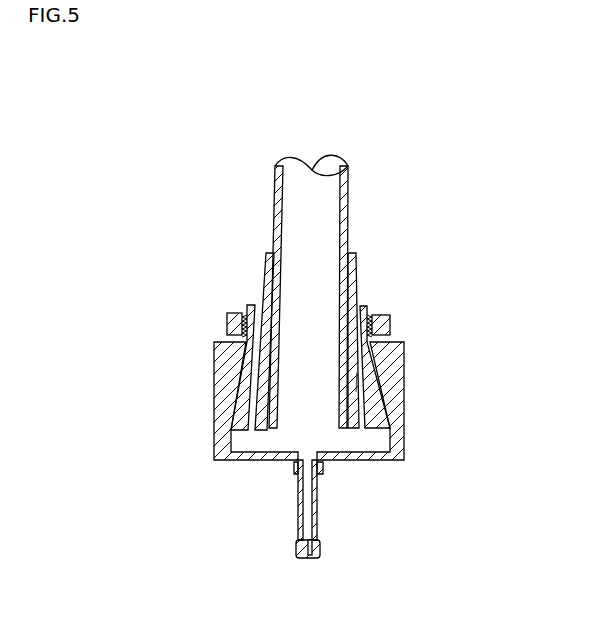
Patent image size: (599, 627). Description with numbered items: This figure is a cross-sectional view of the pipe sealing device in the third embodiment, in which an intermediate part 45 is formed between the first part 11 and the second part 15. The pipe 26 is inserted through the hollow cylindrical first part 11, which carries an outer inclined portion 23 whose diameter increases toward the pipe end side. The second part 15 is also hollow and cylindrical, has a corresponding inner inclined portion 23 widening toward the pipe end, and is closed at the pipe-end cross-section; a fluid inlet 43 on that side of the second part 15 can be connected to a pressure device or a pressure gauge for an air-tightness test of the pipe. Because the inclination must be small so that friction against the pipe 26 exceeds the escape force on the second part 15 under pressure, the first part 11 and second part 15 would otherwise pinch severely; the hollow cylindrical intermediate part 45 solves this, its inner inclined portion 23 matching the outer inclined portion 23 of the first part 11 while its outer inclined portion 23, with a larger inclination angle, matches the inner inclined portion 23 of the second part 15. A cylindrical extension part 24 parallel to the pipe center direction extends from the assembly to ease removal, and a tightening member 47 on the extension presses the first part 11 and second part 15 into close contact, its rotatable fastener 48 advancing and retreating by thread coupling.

The second part 15 is at (210, 385).
The pipe 26 is at (243, 157).
The first part 11 is at (265, 407).
The intermediate part 45 is at (245, 385).
The cylindrical extension part 24 is at (240, 292).
The tightening member 47 is at (372, 303).
The rotatable fastener 48 is at (390, 312).
The inclined portion 23 is at (361, 376).
The fluid inlet 43 is at (338, 512).